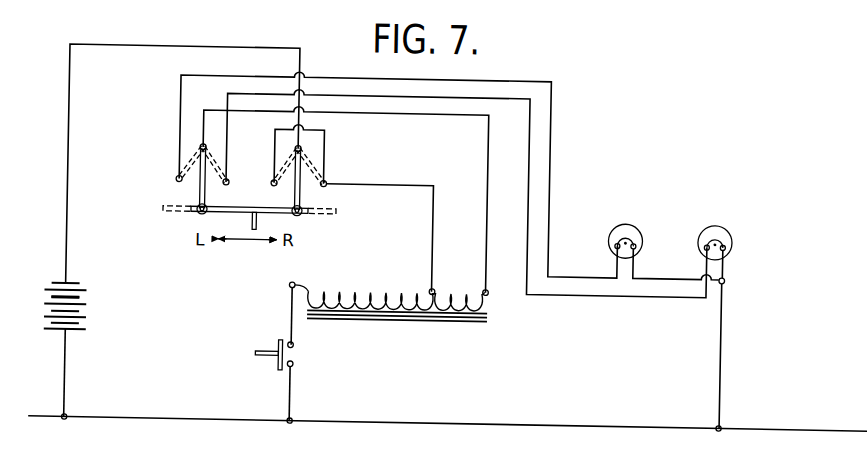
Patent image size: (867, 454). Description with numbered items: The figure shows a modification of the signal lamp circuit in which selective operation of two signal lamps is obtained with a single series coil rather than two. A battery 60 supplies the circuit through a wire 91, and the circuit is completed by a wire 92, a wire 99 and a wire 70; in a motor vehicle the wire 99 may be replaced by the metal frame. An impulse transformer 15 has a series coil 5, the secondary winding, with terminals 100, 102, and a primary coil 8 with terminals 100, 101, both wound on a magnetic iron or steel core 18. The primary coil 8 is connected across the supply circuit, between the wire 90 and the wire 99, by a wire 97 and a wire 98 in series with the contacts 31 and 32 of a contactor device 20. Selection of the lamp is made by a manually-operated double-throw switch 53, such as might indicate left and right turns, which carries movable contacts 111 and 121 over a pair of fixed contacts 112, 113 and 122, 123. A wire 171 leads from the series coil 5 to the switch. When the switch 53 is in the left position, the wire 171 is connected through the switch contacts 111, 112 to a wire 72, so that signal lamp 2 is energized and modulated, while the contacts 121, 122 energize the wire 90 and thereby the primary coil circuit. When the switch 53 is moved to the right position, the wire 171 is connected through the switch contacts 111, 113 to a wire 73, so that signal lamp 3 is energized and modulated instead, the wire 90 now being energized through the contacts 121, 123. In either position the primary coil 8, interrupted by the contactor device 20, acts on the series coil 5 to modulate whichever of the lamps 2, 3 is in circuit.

The wire 91 is at (154, 43).
The wire 72 is at (182, 97).
The wire 73 is at (228, 91).
The wire 171 is at (245, 108).
The switch contact 111 is at (203, 142).
The switch contact 112 is at (178, 176).
The switch contact 113 is at (232, 179).
The switch contact 121 is at (306, 142).
The switch contact 122 is at (275, 176).
The switch contact 123 is at (330, 178).
The wire 90 is at (386, 180).
The double-throw switch 53 is at (204, 211).
The battery 60 is at (63, 282).
The wire 92 is at (71, 370).
The wire 99 is at (519, 417).
The terminal 101 is at (297, 278).
The wire 97 is at (296, 305).
The contact 32 is at (300, 339).
The contact 31 is at (300, 361).
The wire 98 is at (297, 393).
The contactor device 20 is at (281, 358).
The series coil 5 is at (464, 284).
The primary coil 8 is at (370, 284).
The terminal 100 is at (435, 282).
The terminal 102 is at (492, 288).
The core 18 is at (410, 310).
The impulse transformer 15 is at (389, 296).
The signal lamp 2 is at (637, 218).
The signal lamp 3 is at (727, 217).
The wire 70 is at (726, 343).